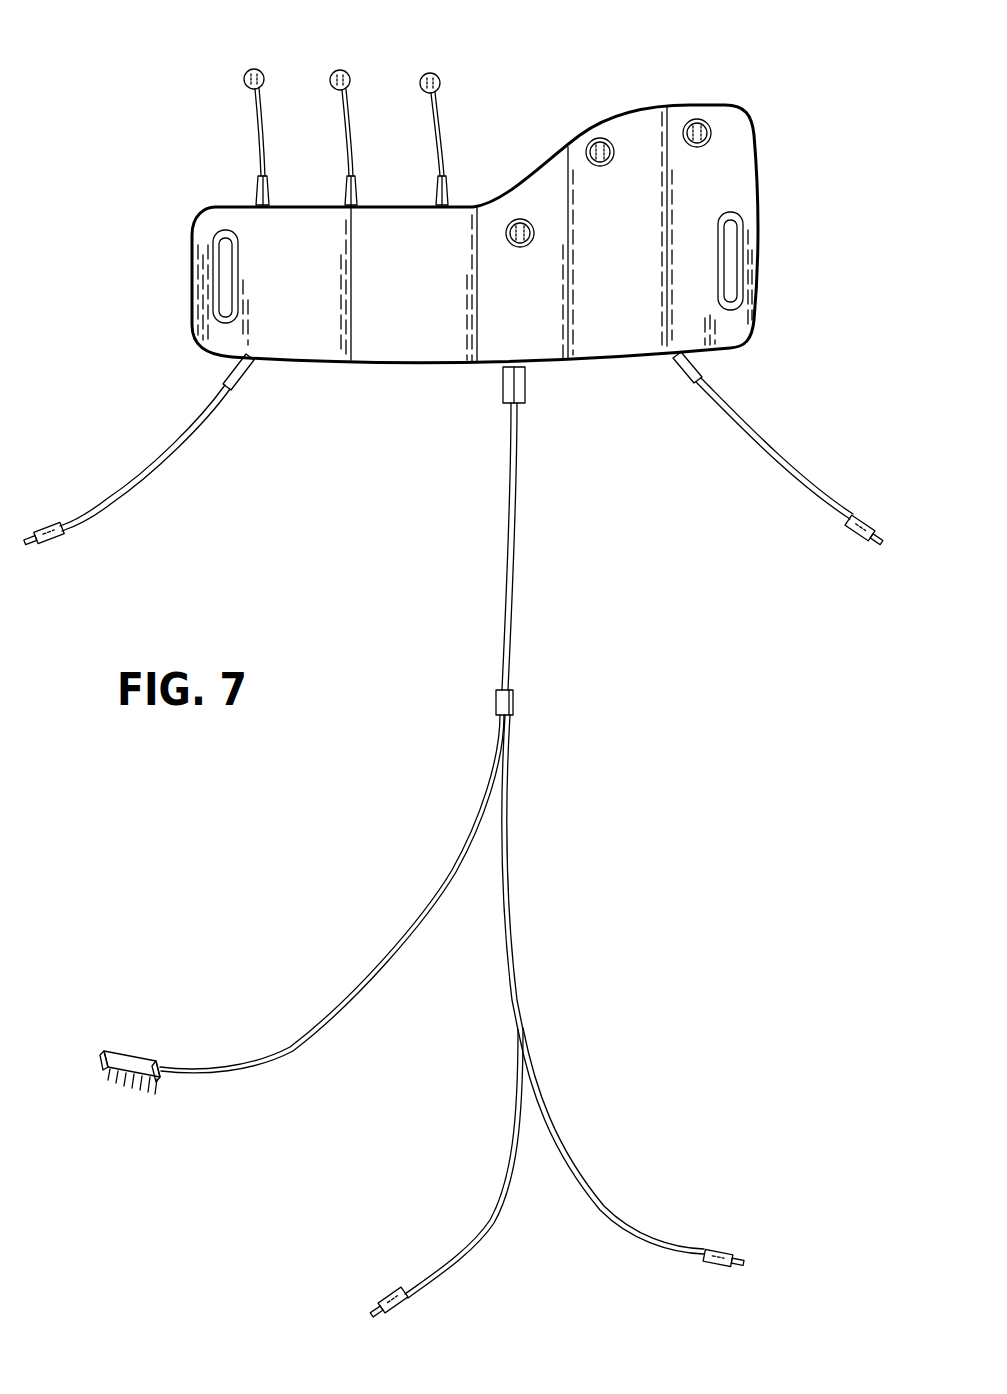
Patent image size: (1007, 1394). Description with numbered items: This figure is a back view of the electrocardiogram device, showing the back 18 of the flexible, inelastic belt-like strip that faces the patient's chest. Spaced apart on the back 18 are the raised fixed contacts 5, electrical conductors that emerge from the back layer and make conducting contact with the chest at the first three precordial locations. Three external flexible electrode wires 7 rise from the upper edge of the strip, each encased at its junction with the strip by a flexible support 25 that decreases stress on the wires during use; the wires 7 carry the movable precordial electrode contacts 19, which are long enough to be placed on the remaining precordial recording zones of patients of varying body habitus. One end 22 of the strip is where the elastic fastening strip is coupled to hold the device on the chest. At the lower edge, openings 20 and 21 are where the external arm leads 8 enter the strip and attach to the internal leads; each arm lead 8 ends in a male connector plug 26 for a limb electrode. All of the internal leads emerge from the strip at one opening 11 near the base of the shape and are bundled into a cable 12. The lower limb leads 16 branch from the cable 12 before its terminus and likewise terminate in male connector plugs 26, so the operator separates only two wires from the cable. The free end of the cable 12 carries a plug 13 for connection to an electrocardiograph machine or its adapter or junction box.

The fixed contact 5 is at (600, 138).
The external flexible electrode wire 7 is at (262, 134).
The external arm lead 8 is at (172, 448).
The opening 11 is at (503, 370).
The cable 12 is at (508, 582).
The plug 13 is at (137, 1055).
The lower limb lead 16 is at (498, 1206).
The back 18 is at (401, 297).
The movable precordial electrode contact 19 is at (252, 68).
The opening 20 is at (672, 350).
The opening 21 is at (244, 357).
The end of belt-like strip 22 is at (222, 271).
The flexible support 25 is at (270, 192).
The male connector plug 26 is at (55, 535).